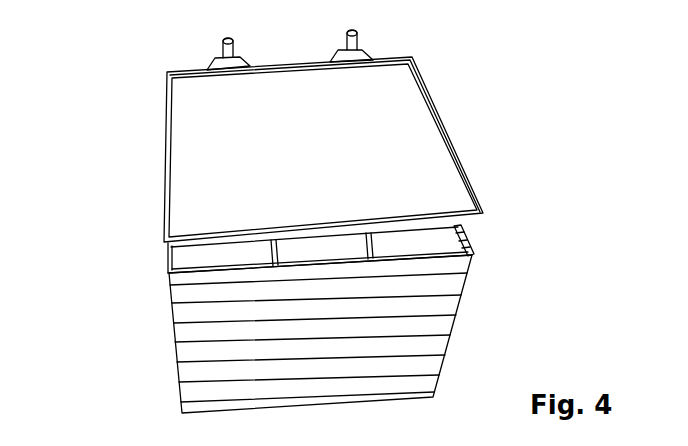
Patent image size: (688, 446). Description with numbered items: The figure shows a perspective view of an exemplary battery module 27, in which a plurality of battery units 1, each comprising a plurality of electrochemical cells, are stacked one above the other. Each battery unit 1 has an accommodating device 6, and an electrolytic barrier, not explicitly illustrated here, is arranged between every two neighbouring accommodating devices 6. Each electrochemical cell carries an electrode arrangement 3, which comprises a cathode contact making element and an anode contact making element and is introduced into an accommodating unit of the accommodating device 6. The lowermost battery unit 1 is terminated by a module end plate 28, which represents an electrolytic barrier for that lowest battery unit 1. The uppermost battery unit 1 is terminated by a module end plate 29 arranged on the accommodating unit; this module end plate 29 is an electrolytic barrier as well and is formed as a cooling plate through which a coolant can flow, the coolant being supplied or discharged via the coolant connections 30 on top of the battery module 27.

The battery module 27 is at (113, 115).
The module end plate 29 is at (433, 147).
The coolant connections 30 is at (222, 47).
The electrode arrangement 3 is at (185, 258).
The module end plate 28 is at (433, 397).
The battery unit 1 is at (490, 258).
The accommodating device 6 is at (171, 283).